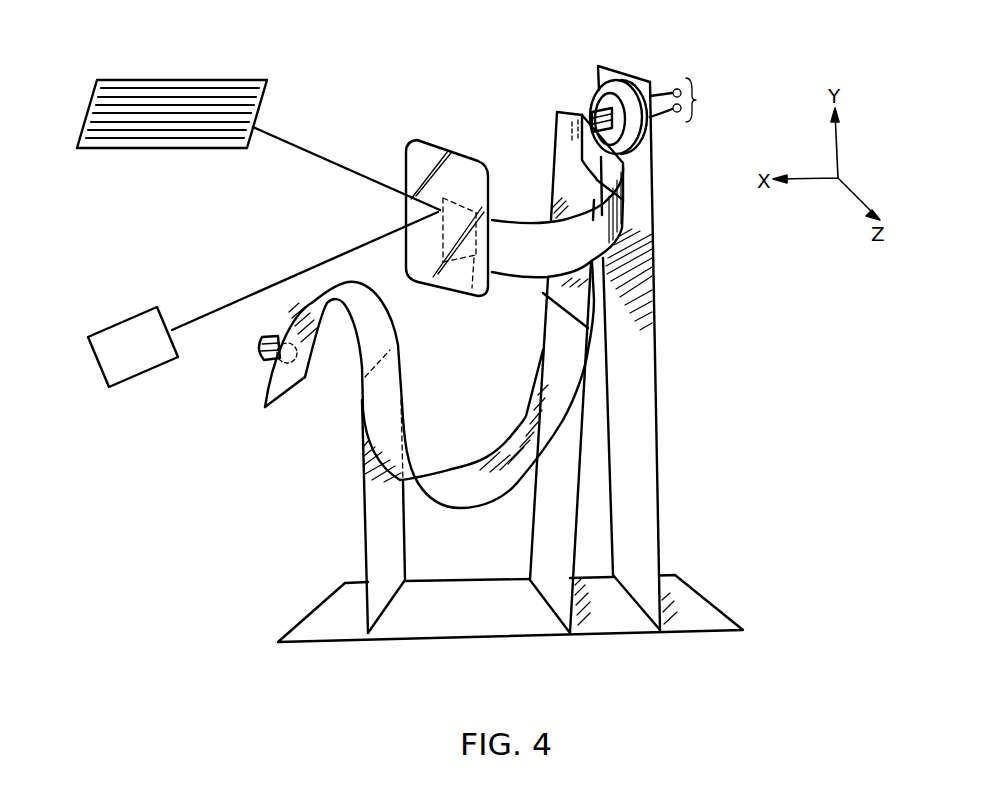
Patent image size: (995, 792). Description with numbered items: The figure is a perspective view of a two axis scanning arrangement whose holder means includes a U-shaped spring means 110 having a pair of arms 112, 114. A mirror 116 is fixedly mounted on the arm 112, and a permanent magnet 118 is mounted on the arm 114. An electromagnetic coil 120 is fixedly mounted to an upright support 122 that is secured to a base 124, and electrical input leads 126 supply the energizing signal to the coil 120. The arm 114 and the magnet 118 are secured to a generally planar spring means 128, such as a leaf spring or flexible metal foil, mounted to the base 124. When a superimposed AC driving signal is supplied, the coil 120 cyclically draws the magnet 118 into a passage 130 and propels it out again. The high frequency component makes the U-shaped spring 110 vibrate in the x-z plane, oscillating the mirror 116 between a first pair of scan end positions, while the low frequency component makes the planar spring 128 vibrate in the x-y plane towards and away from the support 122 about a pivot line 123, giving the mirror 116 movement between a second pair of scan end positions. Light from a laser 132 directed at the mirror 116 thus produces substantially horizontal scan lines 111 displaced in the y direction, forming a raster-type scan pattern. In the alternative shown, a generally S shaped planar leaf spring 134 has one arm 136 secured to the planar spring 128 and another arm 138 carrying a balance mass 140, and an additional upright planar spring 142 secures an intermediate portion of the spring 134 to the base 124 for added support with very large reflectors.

The U-shaped spring means 110 is at (623, 220).
The horizontal scan lines 111 is at (247, 82).
The arm 112 is at (468, 288).
The arm 114 is at (590, 152).
The mirror 116 is at (418, 155).
The permanent magnet 118 is at (593, 112).
The electromagnetic coil 120 is at (642, 87).
The upright support 122 is at (645, 348).
The pivot line 123 is at (550, 608).
The base 124 is at (617, 620).
The electrical input leads 126 is at (690, 100).
The planar spring means 128 is at (545, 542).
The passage 130 is at (617, 68).
The laser 132 is at (187, 402).
The S shaped planar leaf spring 134 is at (470, 477).
The arm 136 is at (558, 327).
The arm 138 is at (298, 380).
The balance mass 140 is at (260, 357).
The upright planar spring 142 is at (373, 535).